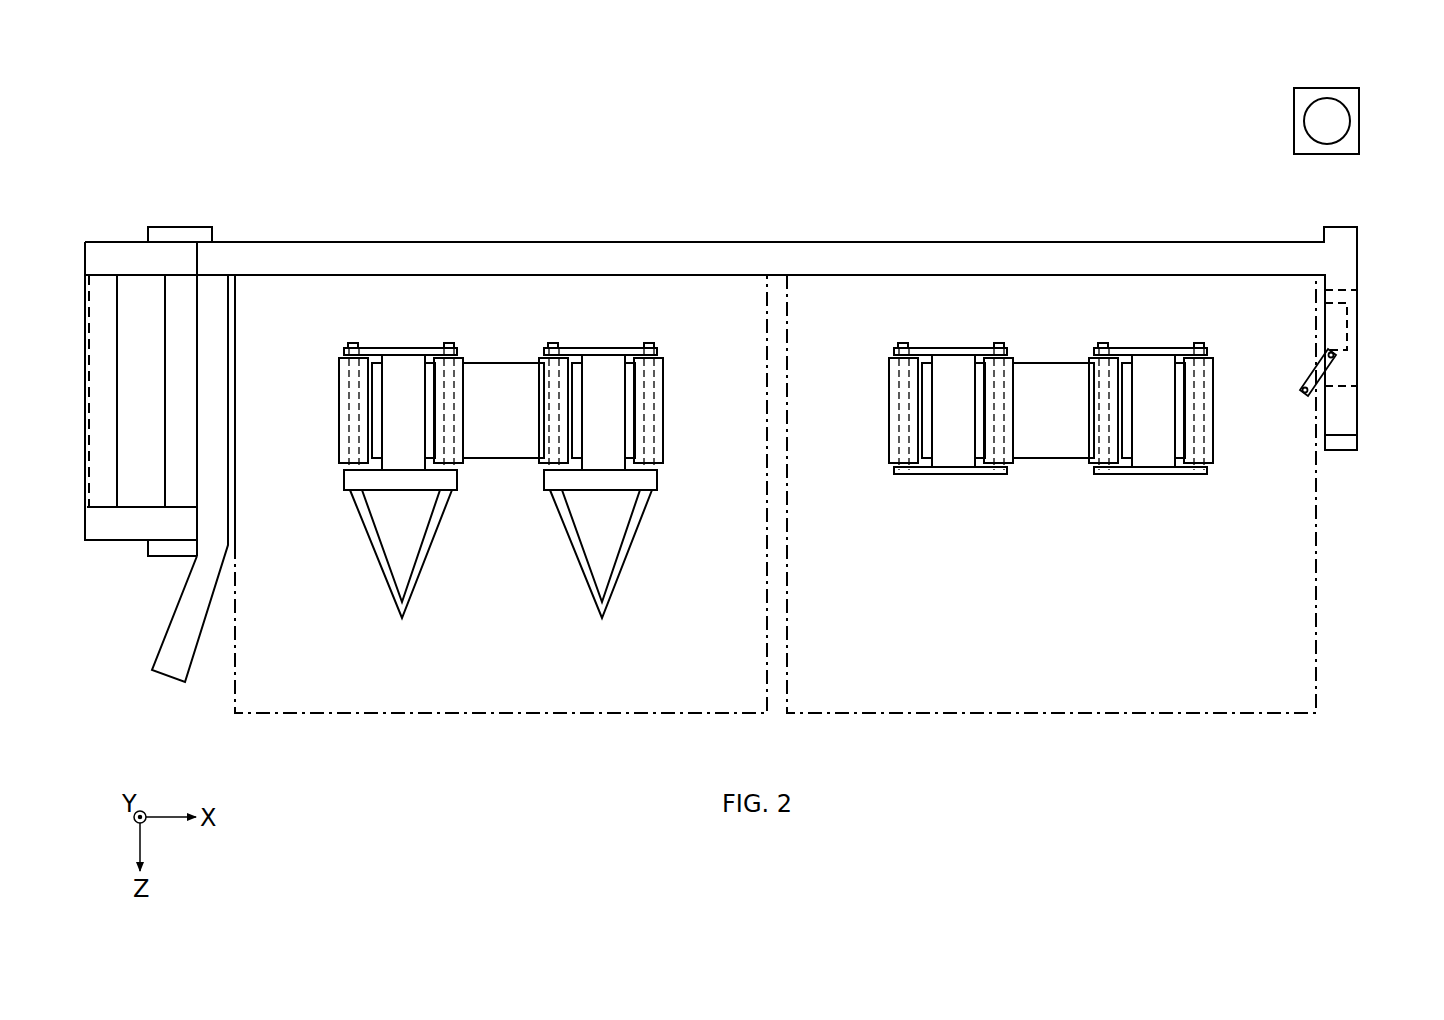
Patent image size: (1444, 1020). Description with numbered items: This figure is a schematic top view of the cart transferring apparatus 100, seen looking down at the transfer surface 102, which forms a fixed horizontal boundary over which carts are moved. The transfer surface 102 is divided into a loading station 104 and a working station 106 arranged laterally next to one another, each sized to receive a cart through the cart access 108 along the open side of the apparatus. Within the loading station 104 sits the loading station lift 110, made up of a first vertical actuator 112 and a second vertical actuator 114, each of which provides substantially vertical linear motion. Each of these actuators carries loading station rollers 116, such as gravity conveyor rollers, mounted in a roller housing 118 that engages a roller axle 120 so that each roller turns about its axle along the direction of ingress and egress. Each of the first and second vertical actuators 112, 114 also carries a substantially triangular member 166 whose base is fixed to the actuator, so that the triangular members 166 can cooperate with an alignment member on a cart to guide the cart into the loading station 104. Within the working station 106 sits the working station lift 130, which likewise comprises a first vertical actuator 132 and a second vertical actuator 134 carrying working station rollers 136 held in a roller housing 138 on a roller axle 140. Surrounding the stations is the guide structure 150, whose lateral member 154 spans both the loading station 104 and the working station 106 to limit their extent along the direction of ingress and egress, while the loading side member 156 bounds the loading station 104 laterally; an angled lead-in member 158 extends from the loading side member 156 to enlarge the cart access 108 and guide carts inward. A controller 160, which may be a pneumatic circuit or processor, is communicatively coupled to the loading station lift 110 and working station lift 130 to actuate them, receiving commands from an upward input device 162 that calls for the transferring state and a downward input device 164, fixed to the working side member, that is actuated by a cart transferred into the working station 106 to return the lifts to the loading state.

The cart transferring apparatus 100 is at (285, 107).
The transfer surface 102 is at (775, 523).
The loading station 104 is at (500, 715).
The working station 106 is at (1045, 715).
The cart access 108 is at (1257, 733).
The loading station lift 110 is at (503, 357).
The first vertical actuator 112 is at (553, 530).
The second vertical actuator 114 is at (353, 530).
The loading station roller 116 is at (338, 405).
The roller housing 118 is at (422, 492).
The roller axle 120 is at (353, 344).
The working station lift 130 is at (1050, 468).
The first vertical actuator 132 is at (944, 493).
The second vertical actuator 134 is at (1145, 493).
The working station roller 136 is at (888, 405).
The roller housing 138 is at (958, 475).
The roller axle 140 is at (903, 344).
The guide structure 150 is at (893, 188).
The lateral member 154 is at (732, 256).
The loading side member 156 is at (220, 362).
The lead-in member 158 is at (170, 638).
The controller 160 is at (95, 508).
The upward input device 162 is at (1316, 122).
The downward input device 164 is at (1310, 403).
The substantially triangular member 166 is at (422, 570).